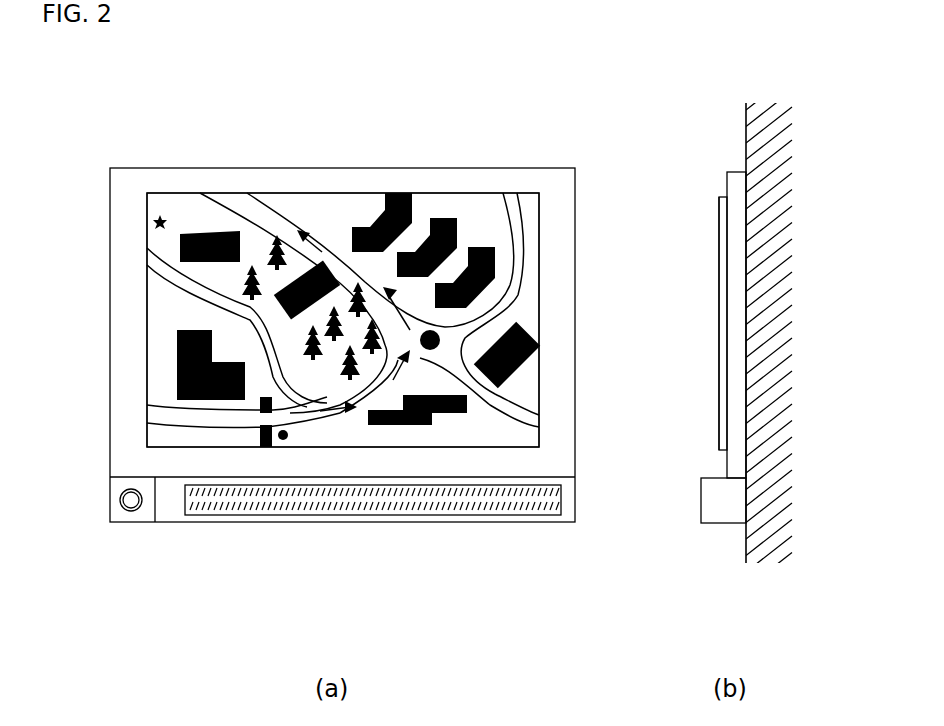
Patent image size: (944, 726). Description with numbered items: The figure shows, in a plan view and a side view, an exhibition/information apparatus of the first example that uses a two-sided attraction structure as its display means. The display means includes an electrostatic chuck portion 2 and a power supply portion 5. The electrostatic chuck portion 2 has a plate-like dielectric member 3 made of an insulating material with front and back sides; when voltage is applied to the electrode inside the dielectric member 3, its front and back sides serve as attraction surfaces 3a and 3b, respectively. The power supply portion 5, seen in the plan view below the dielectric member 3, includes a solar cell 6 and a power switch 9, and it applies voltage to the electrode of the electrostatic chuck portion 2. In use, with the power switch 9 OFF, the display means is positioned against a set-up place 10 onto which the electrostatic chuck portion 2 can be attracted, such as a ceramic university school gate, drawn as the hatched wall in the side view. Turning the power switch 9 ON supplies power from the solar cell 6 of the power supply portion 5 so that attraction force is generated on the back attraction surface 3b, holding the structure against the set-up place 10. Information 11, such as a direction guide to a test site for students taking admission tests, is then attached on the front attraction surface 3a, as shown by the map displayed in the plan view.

The electrostatic chuck portion 2 is at (100, 201).
The dielectric member 3 is at (378, 182).
The attraction surface 3a is at (202, 186).
The attraction surface 3b is at (747, 280).
The information 11 is at (472, 193).
The power supply portion 5 is at (100, 503).
The power switch 9 is at (131, 511).
The solar cell 6 is at (253, 515).
The set-up place 10 is at (746, 548).